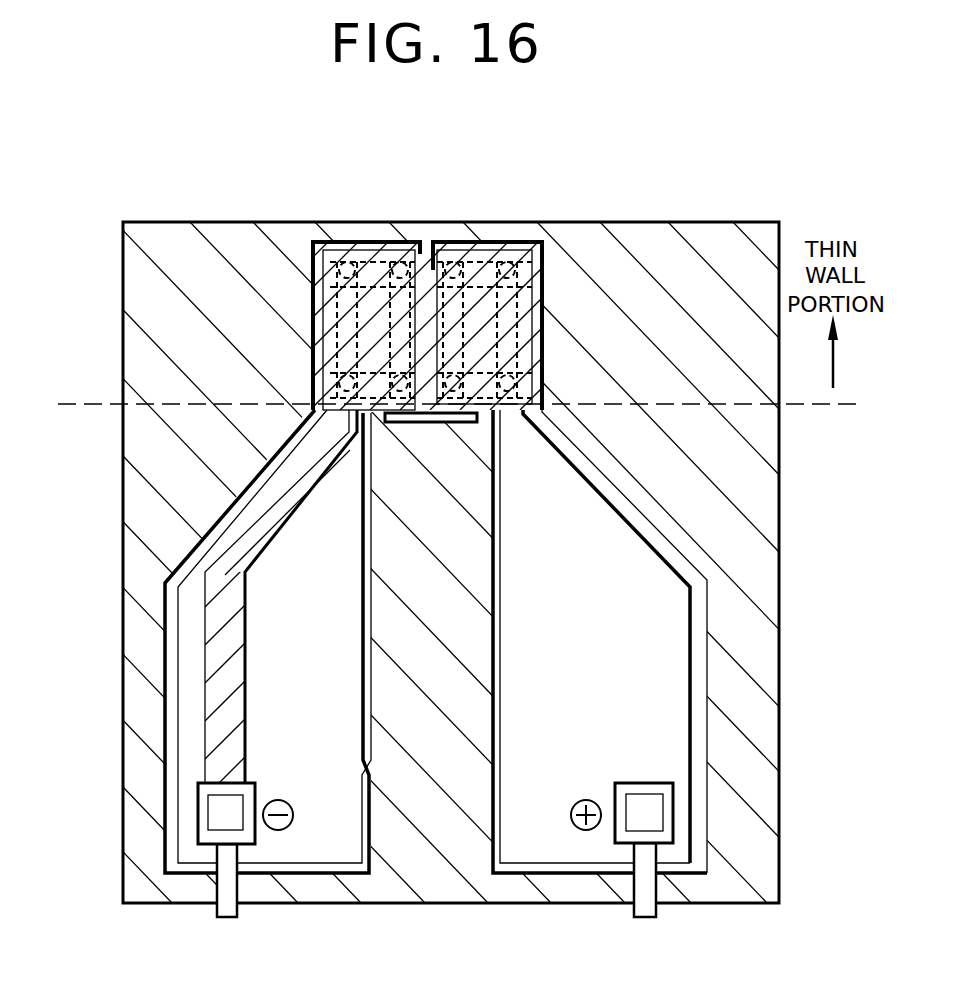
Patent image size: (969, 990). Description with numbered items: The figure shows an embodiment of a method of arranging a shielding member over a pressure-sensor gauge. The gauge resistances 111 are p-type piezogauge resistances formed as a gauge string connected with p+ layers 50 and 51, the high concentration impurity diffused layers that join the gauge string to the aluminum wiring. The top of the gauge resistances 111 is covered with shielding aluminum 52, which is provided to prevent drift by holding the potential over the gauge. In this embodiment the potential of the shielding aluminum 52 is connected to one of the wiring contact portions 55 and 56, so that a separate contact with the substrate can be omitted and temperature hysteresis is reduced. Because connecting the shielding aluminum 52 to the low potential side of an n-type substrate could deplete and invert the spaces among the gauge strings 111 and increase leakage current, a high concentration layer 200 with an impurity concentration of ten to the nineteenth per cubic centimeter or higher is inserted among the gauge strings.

The high concentration layer 200 is at (706, 222).
The p+ layer 50 is at (680, 625).
The p+ layer 51 is at (487, 250).
The shielding aluminum 52 is at (362, 258).
The gauge resistances 111 is at (541, 310).
The wiring contact portion 55 is at (200, 812).
The wiring contact portion 56 is at (668, 811).